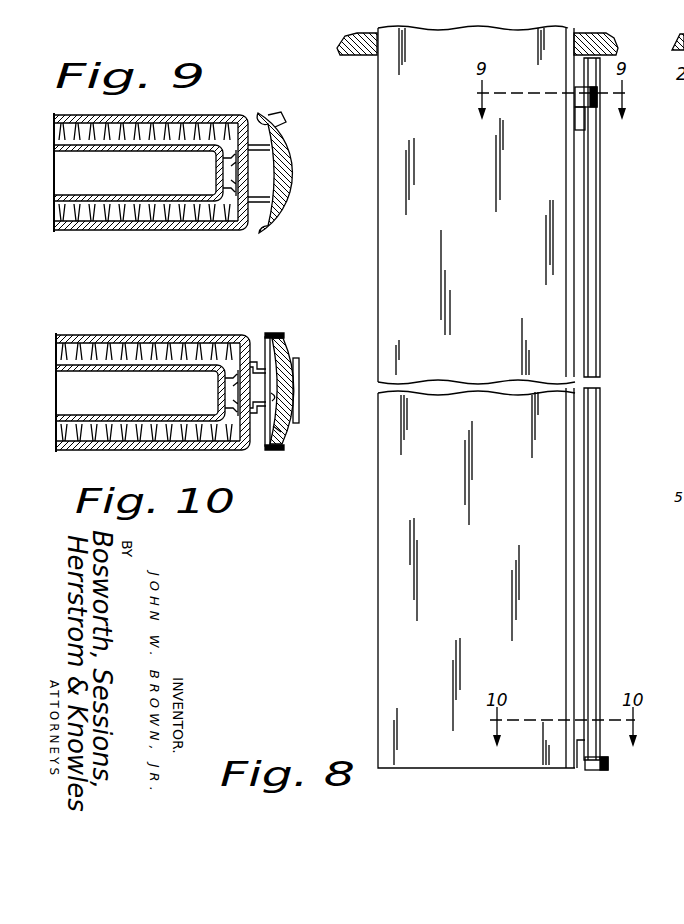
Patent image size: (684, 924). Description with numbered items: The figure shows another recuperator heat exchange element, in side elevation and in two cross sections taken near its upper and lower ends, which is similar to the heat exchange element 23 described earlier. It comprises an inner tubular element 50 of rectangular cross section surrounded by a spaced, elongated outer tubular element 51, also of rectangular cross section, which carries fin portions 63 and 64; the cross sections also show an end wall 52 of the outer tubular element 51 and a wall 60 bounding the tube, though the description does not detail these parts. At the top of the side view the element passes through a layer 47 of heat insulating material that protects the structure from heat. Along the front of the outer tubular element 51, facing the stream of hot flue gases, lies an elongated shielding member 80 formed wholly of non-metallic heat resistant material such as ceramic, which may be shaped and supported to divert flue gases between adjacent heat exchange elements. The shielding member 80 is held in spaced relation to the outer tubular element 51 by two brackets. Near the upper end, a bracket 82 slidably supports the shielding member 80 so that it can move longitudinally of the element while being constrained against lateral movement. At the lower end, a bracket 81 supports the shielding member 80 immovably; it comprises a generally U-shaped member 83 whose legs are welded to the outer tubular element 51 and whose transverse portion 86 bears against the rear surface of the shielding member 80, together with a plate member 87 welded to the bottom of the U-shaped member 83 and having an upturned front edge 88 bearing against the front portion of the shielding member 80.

In FIG. 8, the heat exchange element 23 is at (373, 527).
In FIG. 8, the layer of heat insulating material 47 is at (340, 46).
In FIG. 9, the inner tubular element 50 is at (128, 153).
In FIG. 10, the inner tubular element 50 is at (140, 393).
In FIG. 9, the outer tubular element 51 is at (99, 228).
In FIG. 10, the outer tubular element 51 is at (147, 447).
In FIG. 8, the outer tubular element 51 is at (384, 670).
In FIG. 9, the outer tube end wall 52 is at (241, 231).
In FIG. 10, the outer tube end wall 52 is at (147, 324).
In FIG. 9, the tube wall 60 is at (113, 123).
In FIG. 9, the fin portion 63 is at (234, 142).
In FIG. 10, the fin portion 63 is at (239, 357).
In FIG. 9, the fin portion 64 is at (168, 124).
In FIG. 10, the fin portion 64 is at (146, 333).
In FIG. 9, the shielding member 80 is at (302, 166).
In FIG. 10, the shielding member 80 is at (284, 350).
In FIG. 8, the shielding member 80 is at (608, 295).
In FIG. 10, the bracket 81 is at (272, 450).
In FIG. 8, the bracket 81 is at (598, 771).
In FIG. 9, the bracket 82 is at (284, 121).
In FIG. 8, the bracket 82 is at (579, 114).
In FIG. 10, the U-shaped member 83 is at (262, 366).
In FIG. 10, the transverse portion 86 is at (278, 398).
In FIG. 10, the plate member 87 is at (276, 432).
In FIG. 10, the upturned front edge 88 is at (302, 371).